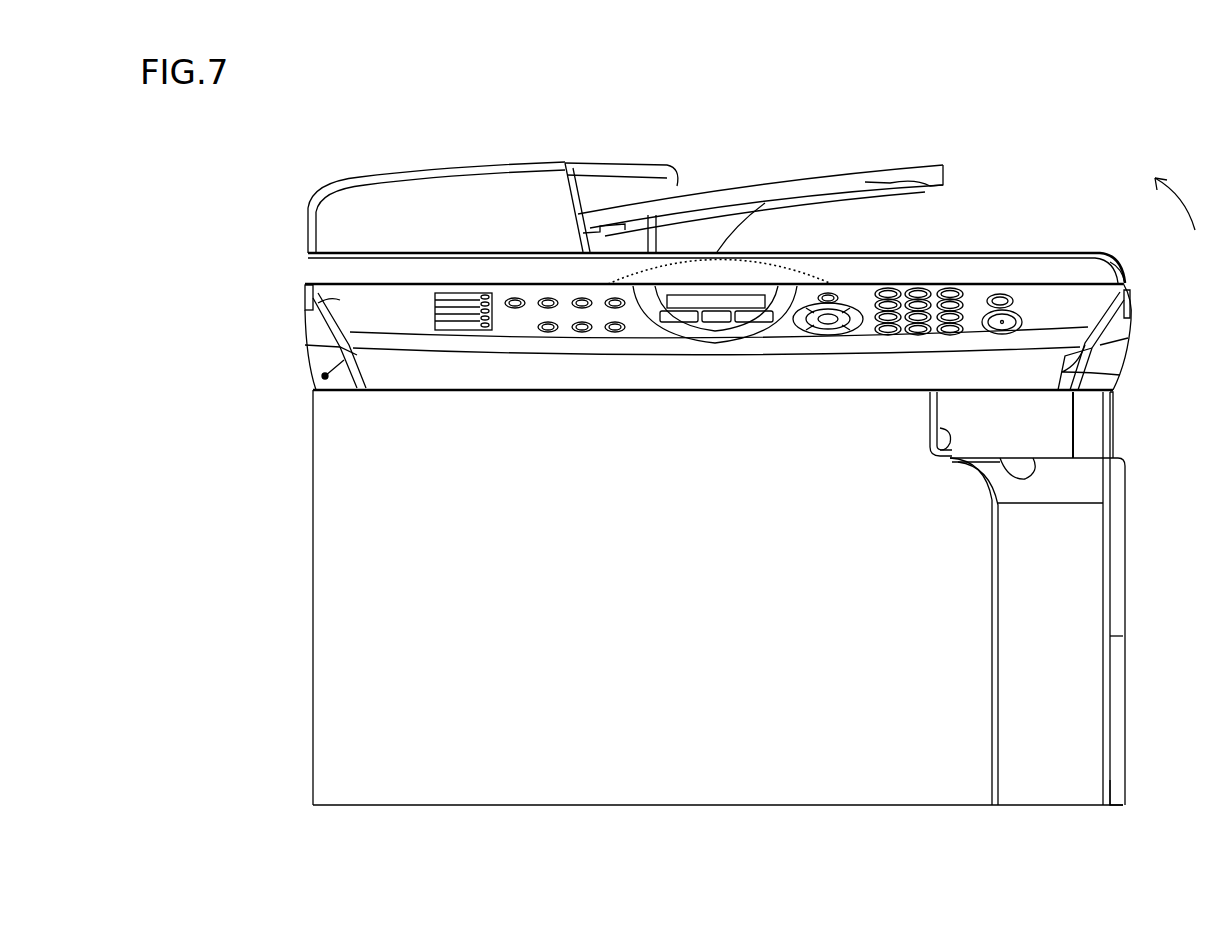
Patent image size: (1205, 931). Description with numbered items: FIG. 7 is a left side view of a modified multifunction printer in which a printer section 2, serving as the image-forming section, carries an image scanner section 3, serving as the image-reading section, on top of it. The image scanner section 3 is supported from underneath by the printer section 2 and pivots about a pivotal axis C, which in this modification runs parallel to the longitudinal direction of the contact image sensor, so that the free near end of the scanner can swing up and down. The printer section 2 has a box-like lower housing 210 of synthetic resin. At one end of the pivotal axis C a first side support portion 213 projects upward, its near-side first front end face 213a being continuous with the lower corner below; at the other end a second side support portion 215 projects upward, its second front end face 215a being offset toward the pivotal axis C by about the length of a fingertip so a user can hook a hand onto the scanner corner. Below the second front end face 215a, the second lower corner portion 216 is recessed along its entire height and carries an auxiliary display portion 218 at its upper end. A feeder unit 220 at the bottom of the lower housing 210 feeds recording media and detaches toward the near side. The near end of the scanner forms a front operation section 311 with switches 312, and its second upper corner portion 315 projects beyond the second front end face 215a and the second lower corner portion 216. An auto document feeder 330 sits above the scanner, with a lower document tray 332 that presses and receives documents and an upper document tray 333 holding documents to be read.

The printer section 2 is at (1127, 505).
The image scanner section 3 is at (1128, 291).
The lower housing 210 is at (313, 632).
The first side support portion 213 is at (1103, 406).
The first front end face 213a is at (1112, 426).
The second side support portion 215 is at (925, 413).
The second front end face 215a is at (945, 450).
The second lower corner portion 216 is at (1078, 691).
The auxiliary display portion 218 is at (1040, 458).
The feeder unit 220 is at (1118, 795).
The front operation section 311 is at (333, 298).
The switches 312 is at (1003, 292).
The second upper corner portion 315 is at (1090, 376).
The auto document feeder 330 is at (334, 190).
The lower document tray 332 is at (1108, 272).
The upper document tray 333 is at (917, 162).
The pivotal axis C is at (321, 375).